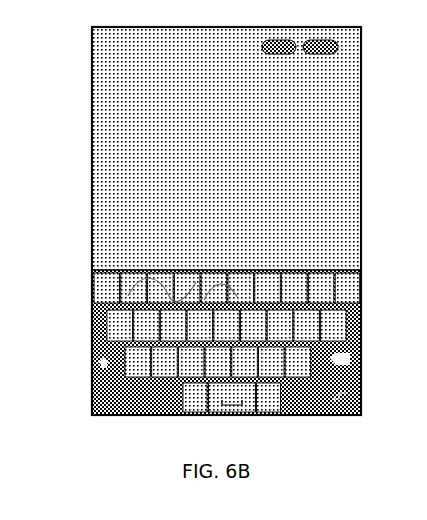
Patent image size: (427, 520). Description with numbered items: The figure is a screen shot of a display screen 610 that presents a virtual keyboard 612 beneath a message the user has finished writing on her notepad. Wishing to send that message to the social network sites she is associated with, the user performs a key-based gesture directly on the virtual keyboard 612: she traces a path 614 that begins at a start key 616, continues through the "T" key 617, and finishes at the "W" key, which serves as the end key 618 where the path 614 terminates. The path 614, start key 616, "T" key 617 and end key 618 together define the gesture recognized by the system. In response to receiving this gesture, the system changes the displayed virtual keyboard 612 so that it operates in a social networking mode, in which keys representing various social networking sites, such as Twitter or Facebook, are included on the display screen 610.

The display screen 610 is at (377, 64).
The virtual keyboard 612 is at (41, 257).
The path 614 is at (73, 342).
The start key 616 is at (50, 418).
The T key 617 is at (230, 258).
The end key 618 is at (140, 258).